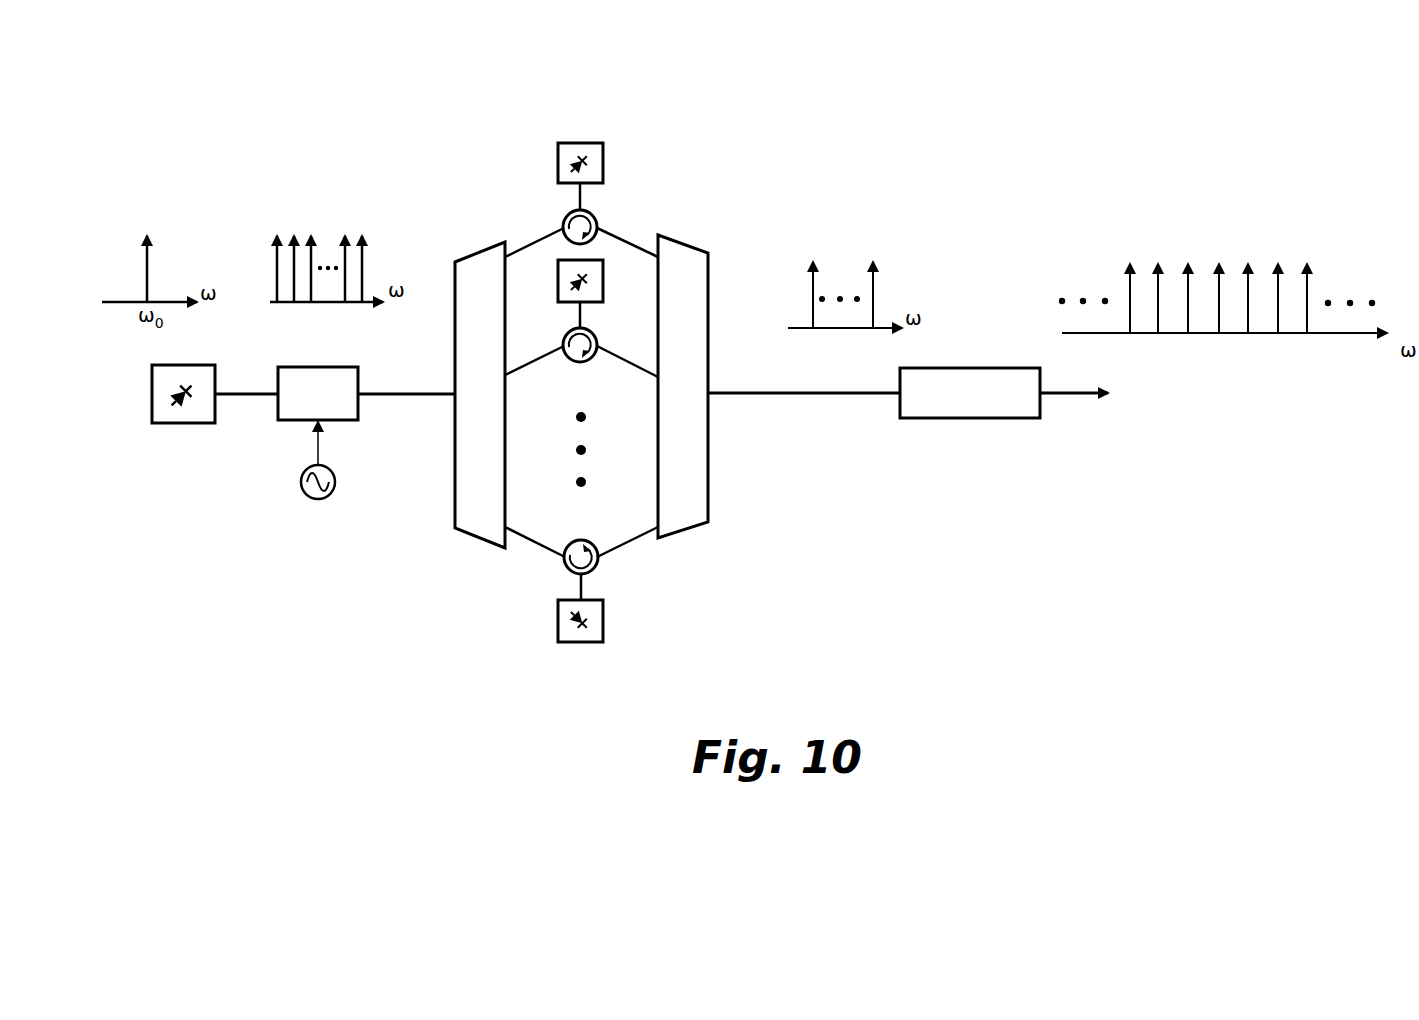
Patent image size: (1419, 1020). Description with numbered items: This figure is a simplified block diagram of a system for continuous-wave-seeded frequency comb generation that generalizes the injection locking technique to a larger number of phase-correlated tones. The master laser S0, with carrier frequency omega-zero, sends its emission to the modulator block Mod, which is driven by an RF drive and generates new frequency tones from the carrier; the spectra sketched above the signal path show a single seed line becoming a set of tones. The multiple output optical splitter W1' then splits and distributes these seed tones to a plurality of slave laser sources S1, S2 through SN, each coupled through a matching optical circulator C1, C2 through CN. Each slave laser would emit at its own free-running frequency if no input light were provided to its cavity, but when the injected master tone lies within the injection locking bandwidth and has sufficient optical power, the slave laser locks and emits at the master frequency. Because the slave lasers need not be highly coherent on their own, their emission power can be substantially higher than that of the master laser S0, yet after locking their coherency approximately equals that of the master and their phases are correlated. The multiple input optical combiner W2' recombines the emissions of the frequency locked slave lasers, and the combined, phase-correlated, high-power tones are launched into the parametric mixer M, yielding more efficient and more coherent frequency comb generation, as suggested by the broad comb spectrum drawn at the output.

The master laser S0 is at (162, 394).
The modulator block Mod is at (318, 393).
The multiple output optical splitter W1' is at (481, 395).
The multiple input optical combiner W2' is at (684, 386).
The slave laser S1 is at (606, 163).
The slave laser S2 is at (602, 281).
The slave laser SN is at (604, 621).
The optical circulator C1 is at (600, 220).
The optical circulator C2 is at (600, 341).
The optical circulator CN is at (602, 564).
The parametric mixer M is at (970, 393).